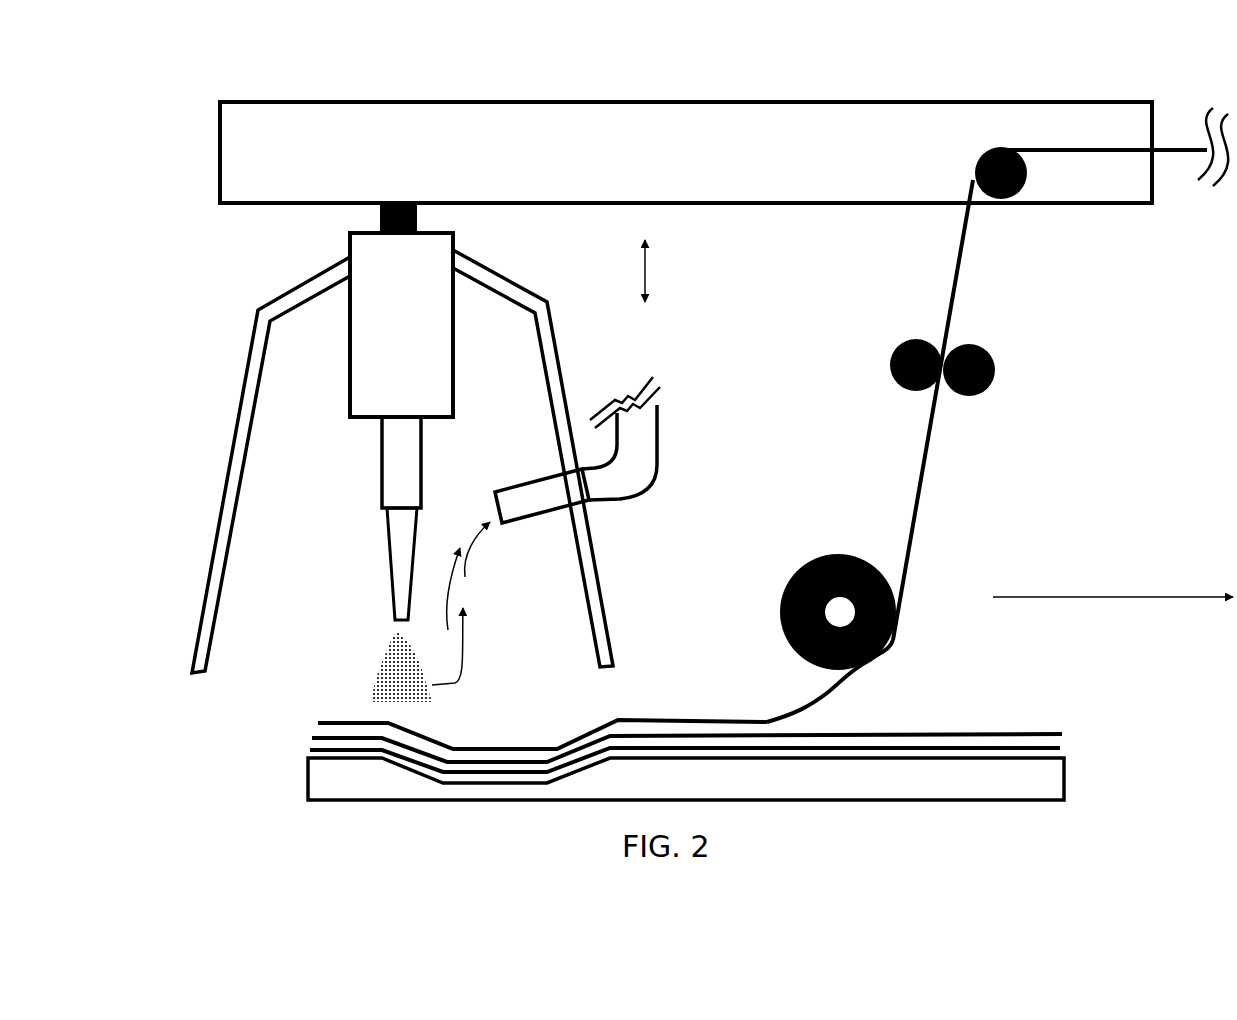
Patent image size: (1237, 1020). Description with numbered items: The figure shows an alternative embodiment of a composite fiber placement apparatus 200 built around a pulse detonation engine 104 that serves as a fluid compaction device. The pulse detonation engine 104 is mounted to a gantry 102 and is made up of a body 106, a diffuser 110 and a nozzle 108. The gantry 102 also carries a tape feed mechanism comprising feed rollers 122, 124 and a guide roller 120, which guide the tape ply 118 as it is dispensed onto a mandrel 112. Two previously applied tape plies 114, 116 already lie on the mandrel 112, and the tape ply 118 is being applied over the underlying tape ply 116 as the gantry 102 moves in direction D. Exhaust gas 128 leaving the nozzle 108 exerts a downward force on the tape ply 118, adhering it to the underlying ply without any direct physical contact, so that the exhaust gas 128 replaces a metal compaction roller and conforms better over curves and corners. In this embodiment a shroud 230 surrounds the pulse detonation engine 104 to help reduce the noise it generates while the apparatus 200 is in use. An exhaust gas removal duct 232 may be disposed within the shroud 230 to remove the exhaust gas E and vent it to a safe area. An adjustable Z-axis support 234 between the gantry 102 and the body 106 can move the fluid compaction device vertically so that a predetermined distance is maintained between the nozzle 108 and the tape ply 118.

The composite fiber placement apparatus 200 is at (305, 68).
The gantry 102 is at (582, 130).
The pulse detonation engine 104 is at (462, 372).
The body 106 is at (373, 242).
The nozzle 108 is at (400, 583).
The diffuser 110 is at (402, 470).
The mandrel 112 is at (882, 780).
The tape ply 114 is at (1063, 748).
The tape ply 116 is at (1012, 730).
The tape ply 118 is at (925, 460).
The guide roller 120 is at (797, 572).
The feed roller 122 is at (910, 340).
The feed roller 124 is at (987, 347).
The exhaust gas 128 is at (387, 668).
The shroud 230 is at (598, 585).
The exhaust gas removal duct 232 is at (537, 497).
The adjustable Z-axis support 234 is at (418, 218).